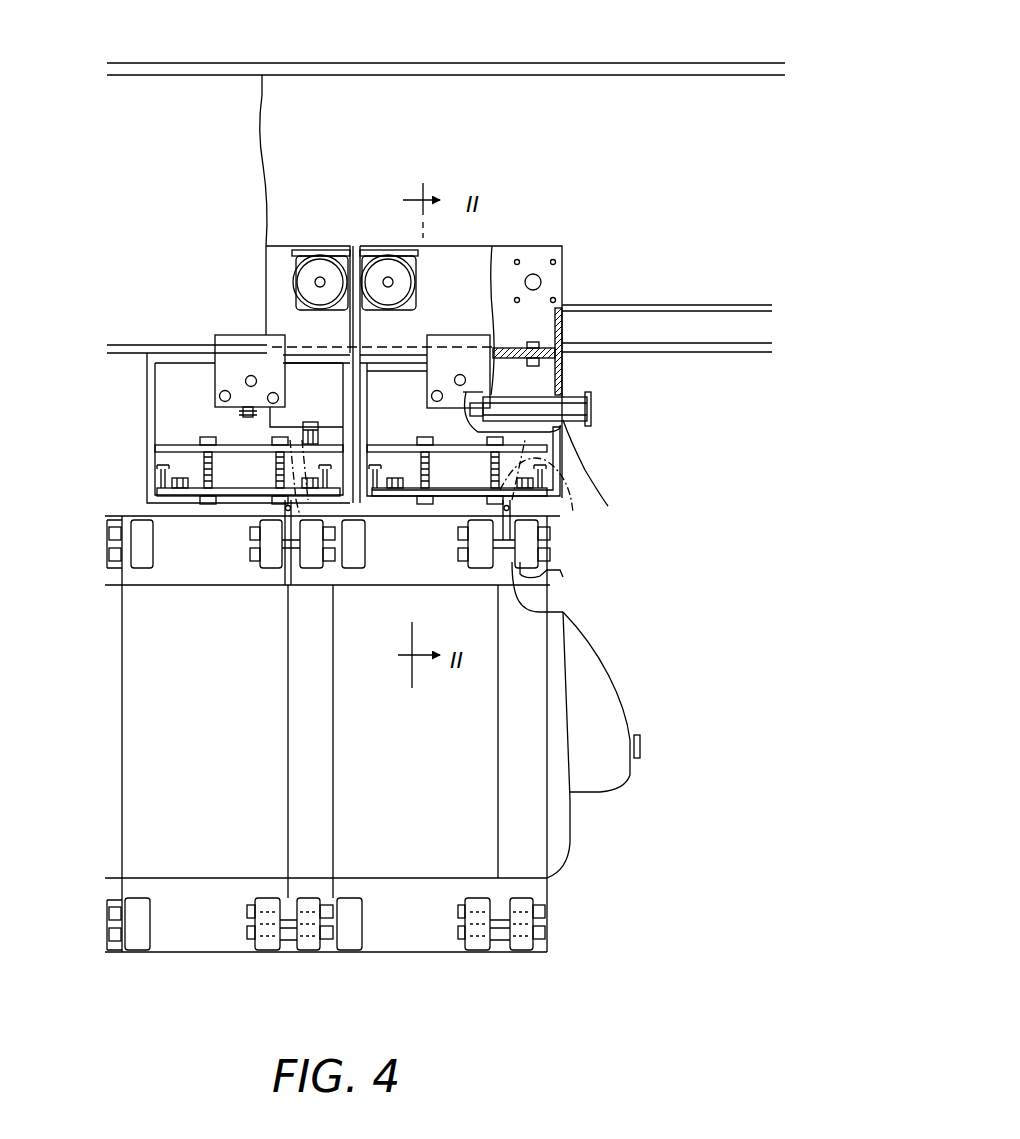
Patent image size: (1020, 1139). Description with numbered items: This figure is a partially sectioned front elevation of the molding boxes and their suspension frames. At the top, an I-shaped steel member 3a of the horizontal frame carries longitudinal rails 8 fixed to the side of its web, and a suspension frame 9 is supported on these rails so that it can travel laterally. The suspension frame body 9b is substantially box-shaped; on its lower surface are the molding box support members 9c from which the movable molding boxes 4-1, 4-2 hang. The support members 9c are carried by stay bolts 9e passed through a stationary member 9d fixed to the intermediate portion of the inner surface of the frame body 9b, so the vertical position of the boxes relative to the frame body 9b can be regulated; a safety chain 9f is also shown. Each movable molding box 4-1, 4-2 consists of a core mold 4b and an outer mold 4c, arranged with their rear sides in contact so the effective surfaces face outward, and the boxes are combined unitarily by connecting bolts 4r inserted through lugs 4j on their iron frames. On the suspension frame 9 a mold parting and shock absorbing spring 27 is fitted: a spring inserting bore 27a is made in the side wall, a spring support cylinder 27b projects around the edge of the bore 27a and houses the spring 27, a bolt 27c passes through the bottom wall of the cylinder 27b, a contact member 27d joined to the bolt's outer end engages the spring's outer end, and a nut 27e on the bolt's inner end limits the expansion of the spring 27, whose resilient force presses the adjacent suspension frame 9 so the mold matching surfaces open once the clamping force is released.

The I-shaped steel member 3a is at (651, 63).
The longitudinal rail 8 is at (666, 305).
The suspension frame 9 is at (573, 290).
The suspension frame body 9b is at (527, 246).
The molding box support member 9c is at (416, 282).
The stationary member 9d is at (393, 440).
The stay bolt 9e is at (433, 496).
The safety chain 9f is at (541, 495).
The mold parting and shock absorbing spring 27 is at (583, 440).
The spring inserting bore 27a is at (591, 400).
The spring support cylinder 27b is at (507, 395).
The bolt 27c is at (604, 502).
The contact member 27d is at (594, 428).
The nut 27e is at (478, 395).
The movable molding box 4-1 is at (183, 957).
The movable molding box 4-2 is at (425, 957).
The core mold 4b is at (627, 686).
The outer mold 4c is at (365, 957).
The lug 4j is at (562, 574).
The connecting bolt 4r is at (563, 612).